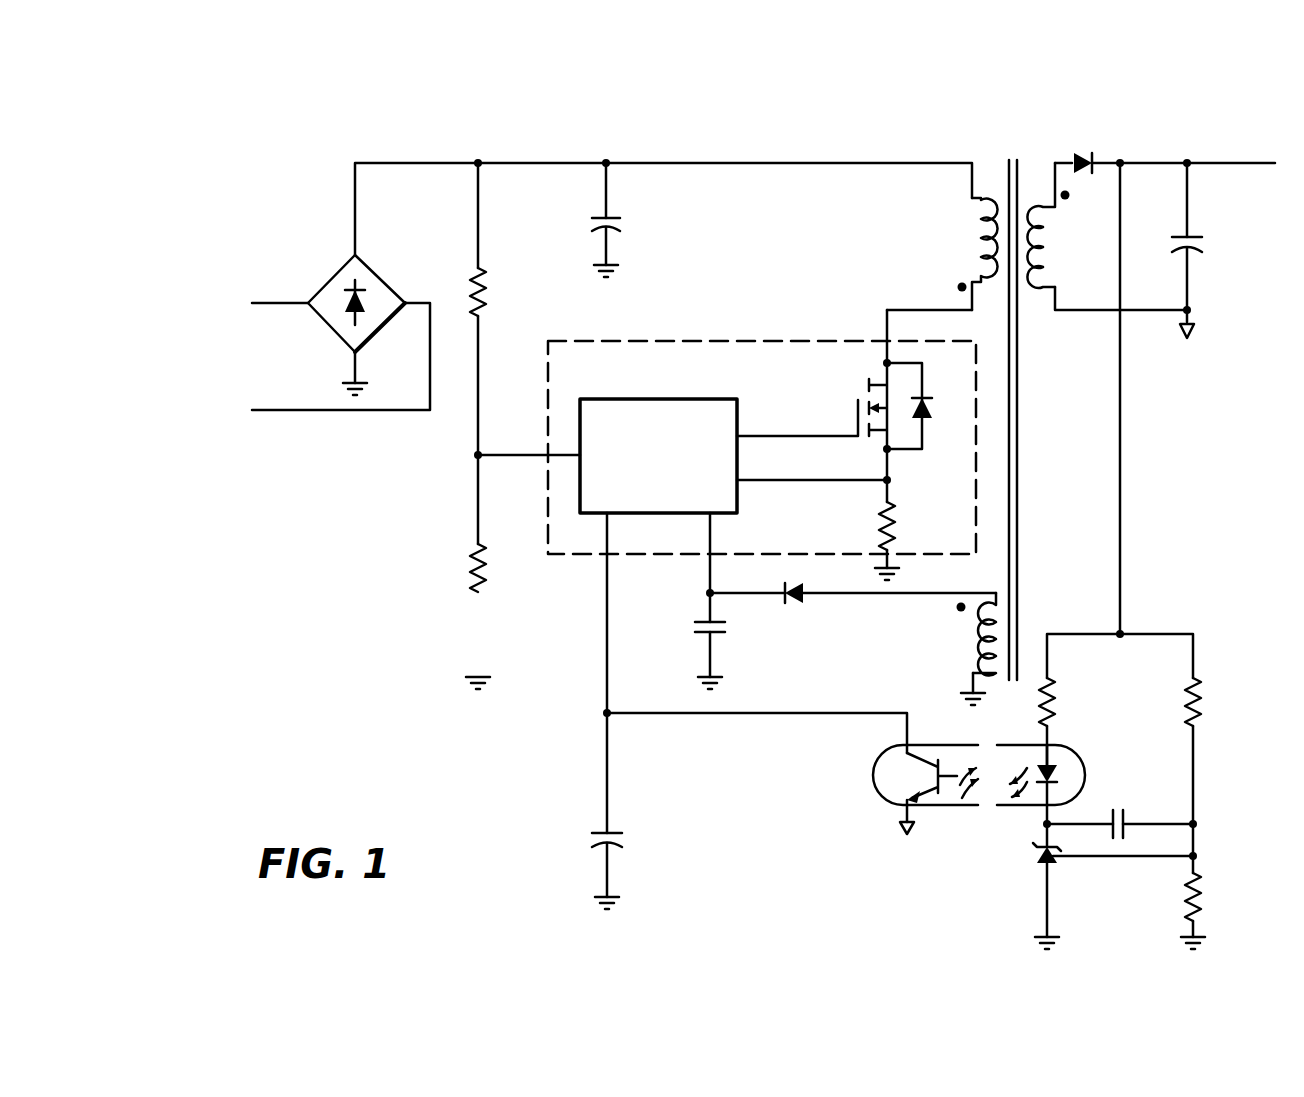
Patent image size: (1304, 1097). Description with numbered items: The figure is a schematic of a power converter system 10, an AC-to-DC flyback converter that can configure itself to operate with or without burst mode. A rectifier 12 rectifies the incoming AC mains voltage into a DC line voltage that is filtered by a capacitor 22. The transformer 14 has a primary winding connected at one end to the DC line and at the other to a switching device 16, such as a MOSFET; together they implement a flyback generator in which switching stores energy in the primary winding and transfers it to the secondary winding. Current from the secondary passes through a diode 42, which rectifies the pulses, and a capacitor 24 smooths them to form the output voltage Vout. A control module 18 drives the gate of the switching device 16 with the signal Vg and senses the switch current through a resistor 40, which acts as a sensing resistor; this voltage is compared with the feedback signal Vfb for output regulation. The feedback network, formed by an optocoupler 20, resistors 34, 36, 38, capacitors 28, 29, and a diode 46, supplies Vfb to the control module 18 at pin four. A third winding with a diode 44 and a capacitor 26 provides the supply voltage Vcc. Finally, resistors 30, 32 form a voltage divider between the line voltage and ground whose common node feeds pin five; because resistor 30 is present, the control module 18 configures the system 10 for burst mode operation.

The power converter system 10 is at (484, 736).
The rectifier 12 is at (328, 278).
The transformer 14 is at (1013, 156).
The switching device 16 is at (853, 390).
The control module 18 is at (701, 397).
The optocoupler 20 is at (960, 818).
The capacitor 22 is at (587, 222).
The capacitor 24 is at (1208, 246).
The capacitor 26 is at (727, 630).
The capacitor 28 is at (597, 845).
The capacitor 29 is at (1117, 808).
The resistor 30 is at (489, 282).
The resistor 32 is at (468, 586).
The resistor 34 is at (1060, 713).
The resistor 36 is at (1206, 713).
The resistor 38 is at (1206, 893).
The resistor 40 is at (873, 520).
The diode 42 is at (1083, 157).
The diode 44 is at (803, 600).
The diode 46 is at (1034, 860).